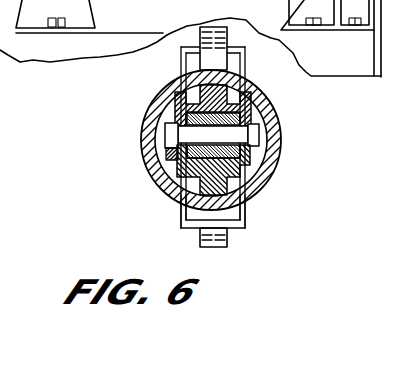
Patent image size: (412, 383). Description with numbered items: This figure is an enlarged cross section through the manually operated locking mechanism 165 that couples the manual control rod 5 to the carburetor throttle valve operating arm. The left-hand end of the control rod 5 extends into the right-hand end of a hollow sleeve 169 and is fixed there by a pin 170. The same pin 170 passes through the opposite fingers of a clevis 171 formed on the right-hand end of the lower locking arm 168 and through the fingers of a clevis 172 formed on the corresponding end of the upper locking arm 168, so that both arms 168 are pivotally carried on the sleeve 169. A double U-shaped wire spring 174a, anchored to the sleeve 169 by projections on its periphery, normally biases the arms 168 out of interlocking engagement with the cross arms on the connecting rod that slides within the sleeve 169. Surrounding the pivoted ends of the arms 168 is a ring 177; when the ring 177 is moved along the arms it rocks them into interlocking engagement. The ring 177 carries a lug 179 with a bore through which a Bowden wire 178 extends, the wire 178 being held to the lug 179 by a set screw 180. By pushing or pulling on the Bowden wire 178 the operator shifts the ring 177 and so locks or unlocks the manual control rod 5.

The manual control rod 5 is at (252, 158).
The manually operated locking mechanism 165 is at (282, 126).
The locking arms 168 is at (240, 43).
The hollow sleeve 169 is at (250, 104).
The pin 170 is at (178, 138).
The clevis 171 is at (240, 162).
The clevis 172 is at (192, 103).
The double U-shaped wire spring 174a is at (245, 58).
The ring 177 is at (168, 176).
The Bowden wire 178 is at (246, 203).
The lug 179 is at (180, 200).
The set screw 180 is at (199, 229).